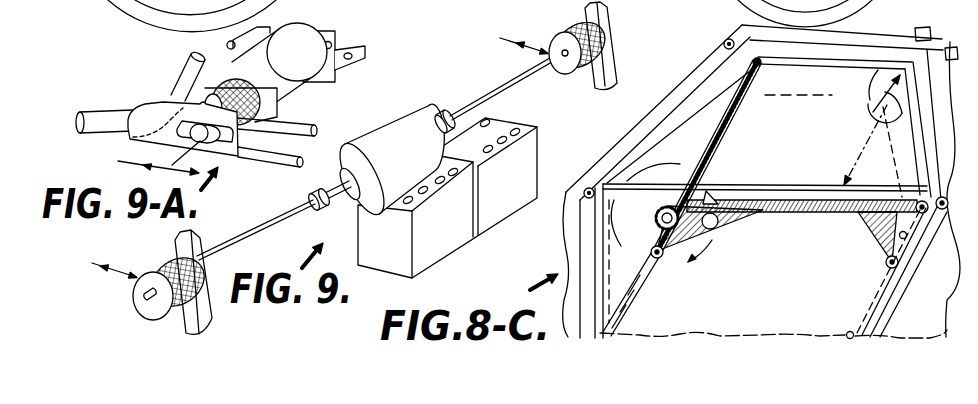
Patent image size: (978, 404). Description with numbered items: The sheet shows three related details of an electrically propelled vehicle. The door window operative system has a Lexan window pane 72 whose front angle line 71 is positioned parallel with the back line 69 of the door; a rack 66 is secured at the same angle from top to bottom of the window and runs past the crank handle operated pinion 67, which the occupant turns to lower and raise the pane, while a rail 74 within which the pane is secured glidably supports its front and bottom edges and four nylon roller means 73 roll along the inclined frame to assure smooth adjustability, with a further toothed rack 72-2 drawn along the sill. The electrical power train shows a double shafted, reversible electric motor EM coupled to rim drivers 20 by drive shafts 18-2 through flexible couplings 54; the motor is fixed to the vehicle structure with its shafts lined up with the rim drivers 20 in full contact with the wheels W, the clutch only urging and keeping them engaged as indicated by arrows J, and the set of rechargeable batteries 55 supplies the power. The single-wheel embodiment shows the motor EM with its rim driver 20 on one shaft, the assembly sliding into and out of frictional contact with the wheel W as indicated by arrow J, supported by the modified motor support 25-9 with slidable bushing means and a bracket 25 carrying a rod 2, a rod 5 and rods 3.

In FIG. 9-A, the rod 2 is at (182, 74).
In FIG. 9-A, the rods 3 is at (293, 175).
In FIG. 9-A, the rod 5 is at (78, 113).
In FIG. 9-A, the rim driver 20 is at (205, 86).
In FIG. 9, the rim driver 20 is at (157, 266).
In FIG. 9-A, the bracket 25 is at (153, 107).
In FIG. 9-A, the modified motor support 25-9 is at (346, 51).
In FIG. 9-A, the electric motor EM is at (311, 98).
In FIG. 9, the electric motor EM is at (357, 141).
In FIG. 9-A, the arrow J is at (152, 158).
In FIG. 9, the arrow J is at (312, 154).
In FIG. 8-C, the arrow J is at (872, 130).
In FIG. 9, the wheel W is at (615, 45).
In FIG. 9, the drive shaft 18-2 is at (271, 223).
In FIG. 9, the flexible coupling 54 is at (321, 208).
In FIG. 9, the rechargeable batteries 55 is at (473, 238).
In FIG. 8-C, the rack 66 is at (720, 136).
In FIG. 8-C, the crank handle operated pinion 67 is at (656, 216).
In FIG. 8-C, the back line of the door 69 is at (883, 306).
In FIG. 8-C, the window front angle line 71 is at (711, 143).
In FIG. 8-C, the door window pane 72 is at (875, 100).
In FIG. 8-C, the rack 72-2 is at (843, 222).
In FIG. 8-C, the roller means 73 is at (759, 70).
In FIG. 8-C, the rail 74 is at (760, 212).